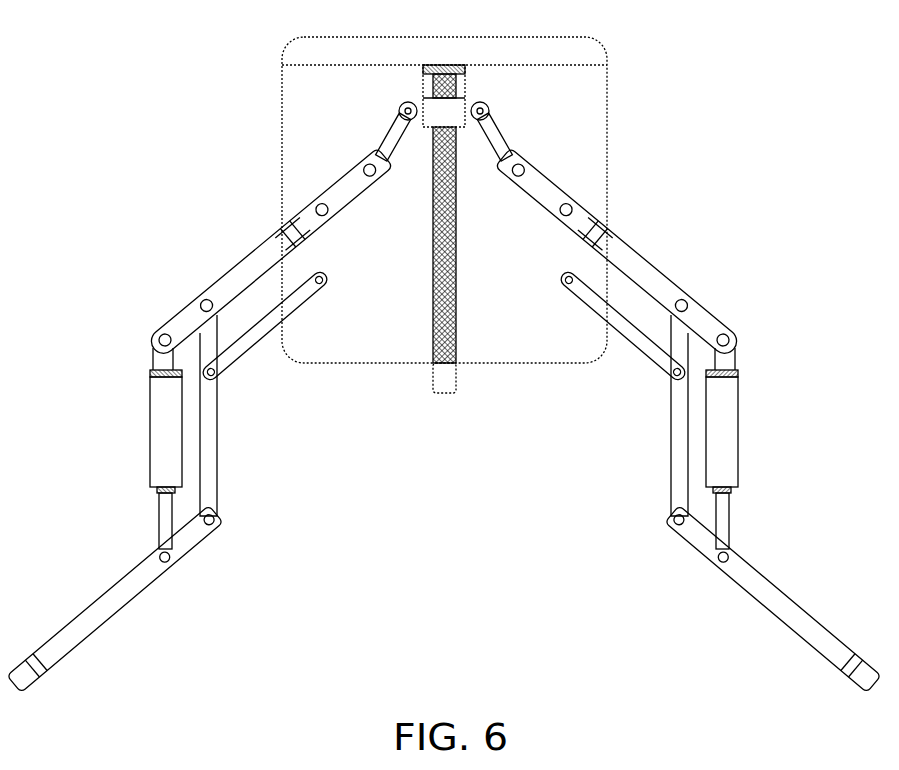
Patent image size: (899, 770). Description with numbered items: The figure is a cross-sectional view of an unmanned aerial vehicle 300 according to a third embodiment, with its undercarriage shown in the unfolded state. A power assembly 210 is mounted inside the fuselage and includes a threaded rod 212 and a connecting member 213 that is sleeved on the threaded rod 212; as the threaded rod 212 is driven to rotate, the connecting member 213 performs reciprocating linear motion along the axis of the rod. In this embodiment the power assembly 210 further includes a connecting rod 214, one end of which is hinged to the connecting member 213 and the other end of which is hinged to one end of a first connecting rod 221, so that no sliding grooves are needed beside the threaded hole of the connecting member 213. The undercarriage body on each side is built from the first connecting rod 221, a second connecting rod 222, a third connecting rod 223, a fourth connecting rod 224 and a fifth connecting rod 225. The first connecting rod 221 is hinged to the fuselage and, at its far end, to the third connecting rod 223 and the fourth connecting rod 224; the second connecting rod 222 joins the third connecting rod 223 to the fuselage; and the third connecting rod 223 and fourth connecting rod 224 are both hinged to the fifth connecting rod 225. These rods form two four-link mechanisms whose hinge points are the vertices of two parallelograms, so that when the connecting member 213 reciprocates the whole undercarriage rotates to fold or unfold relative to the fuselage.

The unmanned aerial vehicle 300 is at (213, 121).
The power assembly 210 is at (686, 35).
The threaded rod 212 is at (470, 68).
The connecting member 213 is at (472, 95).
The connecting rod 214 is at (505, 120).
The first connecting rod 221 is at (643, 267).
The second connecting rod 222 is at (633, 332).
The third connecting rod 223 is at (681, 450).
The fourth connecting rod 224 is at (724, 398).
The fifth connecting rod 225 is at (762, 587).